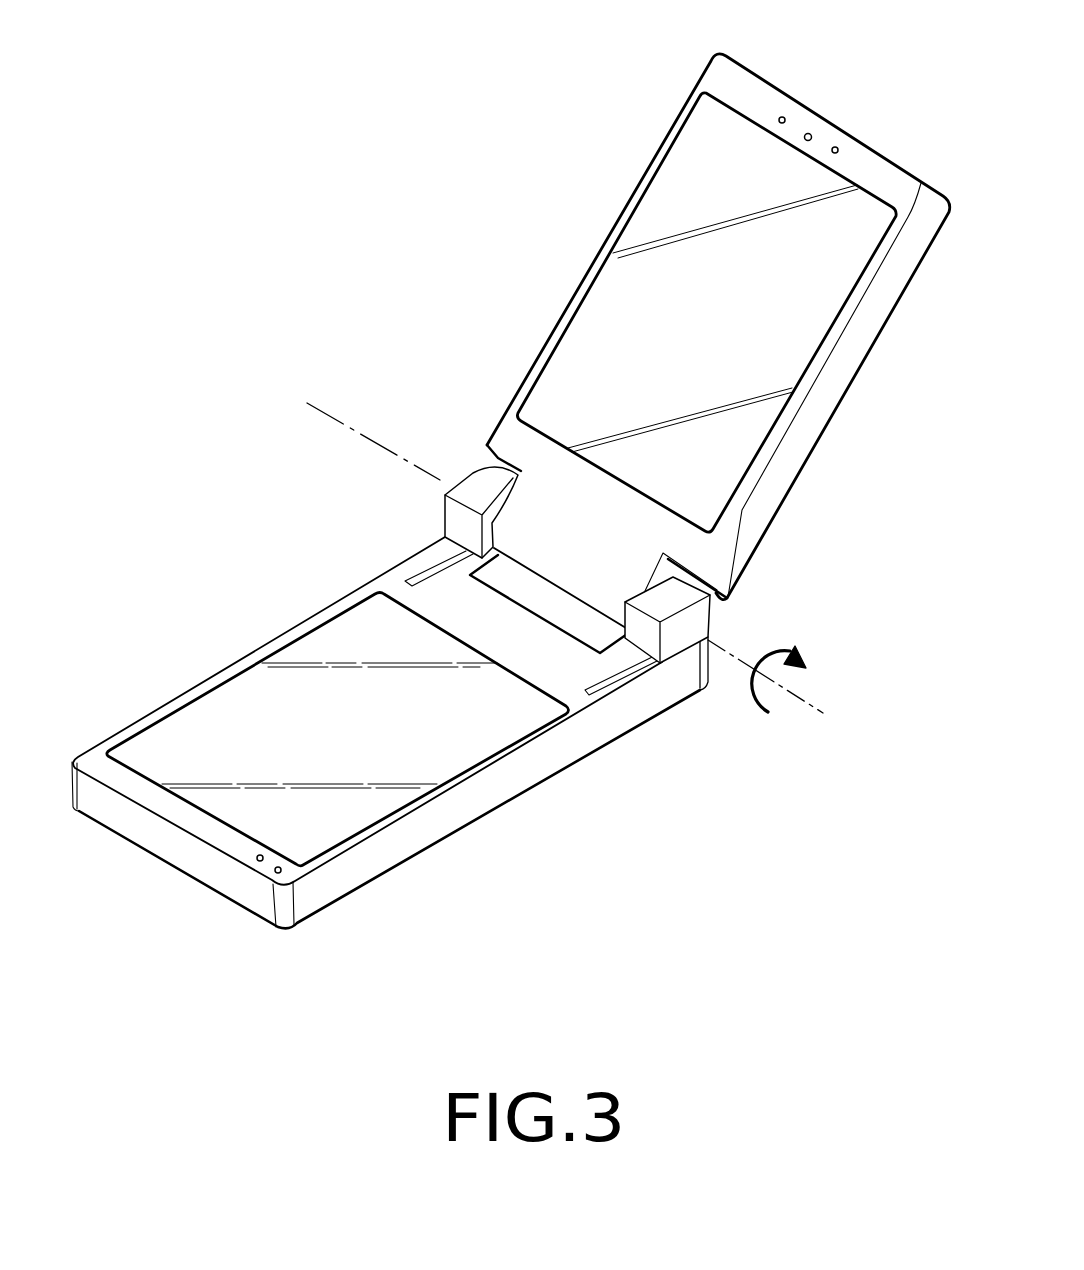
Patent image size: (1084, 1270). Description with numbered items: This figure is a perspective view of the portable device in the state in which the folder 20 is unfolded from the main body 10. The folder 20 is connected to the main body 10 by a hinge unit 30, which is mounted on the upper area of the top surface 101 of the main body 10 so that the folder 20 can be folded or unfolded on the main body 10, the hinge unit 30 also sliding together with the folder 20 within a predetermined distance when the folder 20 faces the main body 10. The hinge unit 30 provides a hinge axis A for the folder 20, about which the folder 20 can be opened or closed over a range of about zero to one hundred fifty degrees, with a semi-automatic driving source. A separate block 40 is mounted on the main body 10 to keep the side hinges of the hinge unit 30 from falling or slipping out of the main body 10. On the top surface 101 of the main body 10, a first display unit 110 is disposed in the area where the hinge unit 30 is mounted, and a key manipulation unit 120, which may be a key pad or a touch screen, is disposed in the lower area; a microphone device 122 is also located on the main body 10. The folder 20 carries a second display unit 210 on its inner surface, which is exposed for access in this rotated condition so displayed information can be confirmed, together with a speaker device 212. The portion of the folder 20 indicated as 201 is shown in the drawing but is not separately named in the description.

The main body 10 is at (170, 700).
The folder 20 is at (624, 203).
The hinge unit 30 is at (473, 473).
The block 40 is at (688, 630).
The top surface 101 is at (400, 590).
The first display unit 110 is at (600, 636).
The key manipulation unit 120 is at (330, 635).
The microphone device 122 is at (259, 863).
The folder housing frame 201 is at (880, 165).
The second display unit 210 is at (583, 330).
The speaker device 212 is at (811, 132).
The hinge axis A is at (806, 693).